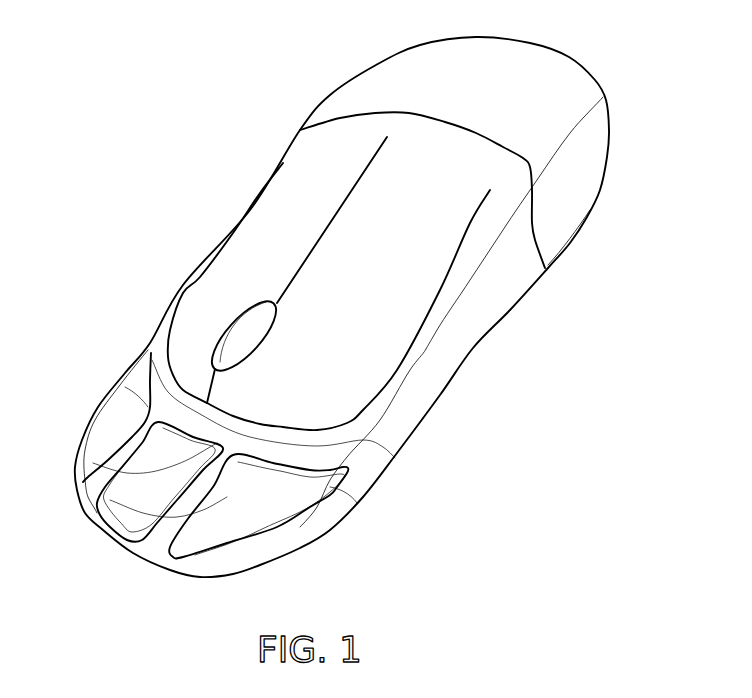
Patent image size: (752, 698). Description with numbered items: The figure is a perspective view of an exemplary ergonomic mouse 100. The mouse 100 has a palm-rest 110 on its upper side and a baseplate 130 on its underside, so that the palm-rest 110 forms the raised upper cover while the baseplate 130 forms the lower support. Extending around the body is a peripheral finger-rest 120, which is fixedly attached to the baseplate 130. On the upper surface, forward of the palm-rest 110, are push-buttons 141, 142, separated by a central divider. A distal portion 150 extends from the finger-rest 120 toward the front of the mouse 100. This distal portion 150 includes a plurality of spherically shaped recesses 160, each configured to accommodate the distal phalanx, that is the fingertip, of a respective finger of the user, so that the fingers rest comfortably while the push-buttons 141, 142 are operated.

The ergonomic mouse 100 is at (151, 174).
The palm-rest 110 is at (378, 92).
The peripheral finger-rest 120 is at (475, 243).
The baseplate 130 is at (598, 227).
The push-button 141 is at (370, 307).
The push-button 142 is at (280, 197).
The distal portion 150 is at (217, 564).
The spherically shaped recess 160 is at (110, 431).